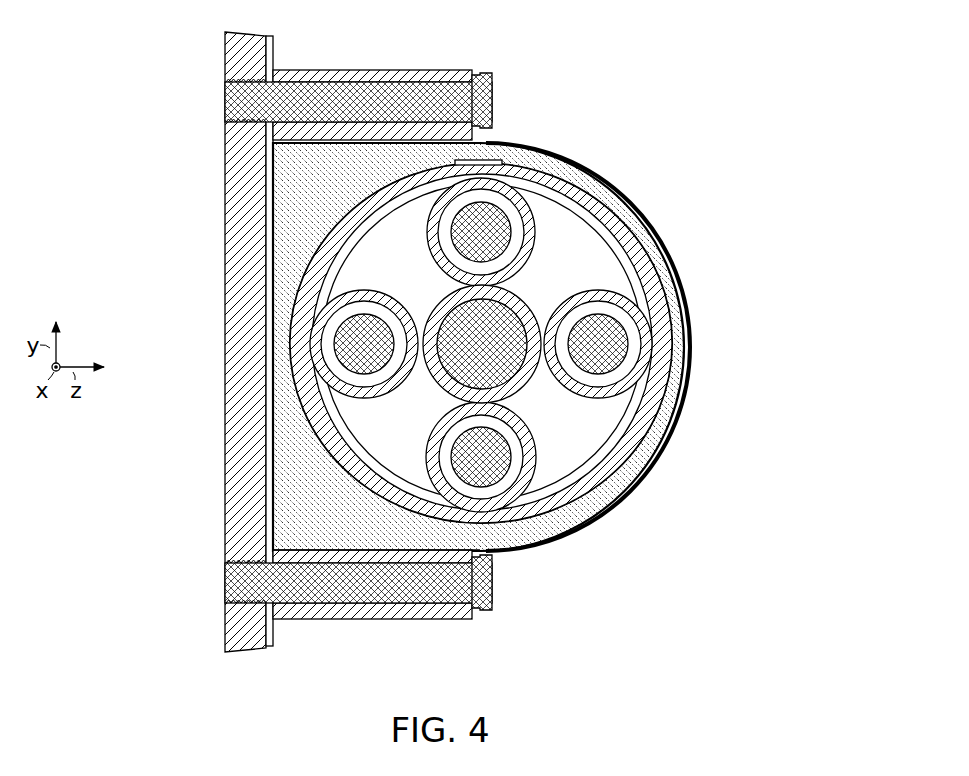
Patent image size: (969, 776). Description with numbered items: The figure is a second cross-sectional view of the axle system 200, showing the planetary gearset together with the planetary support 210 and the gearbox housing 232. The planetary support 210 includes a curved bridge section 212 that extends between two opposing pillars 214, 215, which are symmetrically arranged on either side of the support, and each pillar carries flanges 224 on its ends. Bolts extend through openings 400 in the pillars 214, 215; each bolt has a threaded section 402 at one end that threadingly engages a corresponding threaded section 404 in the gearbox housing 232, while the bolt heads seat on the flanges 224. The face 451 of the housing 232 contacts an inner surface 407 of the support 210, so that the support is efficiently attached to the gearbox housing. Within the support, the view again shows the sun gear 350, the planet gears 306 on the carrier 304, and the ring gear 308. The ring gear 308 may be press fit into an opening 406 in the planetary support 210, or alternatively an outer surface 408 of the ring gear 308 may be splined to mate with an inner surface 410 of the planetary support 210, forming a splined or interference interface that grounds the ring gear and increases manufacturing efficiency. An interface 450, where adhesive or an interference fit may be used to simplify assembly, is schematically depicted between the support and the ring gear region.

The axle system 200 is at (800, 148).
The planetary support 210 is at (638, 172).
The bridge section 212 is at (682, 337).
The pillar 214 is at (385, 63).
The pillar 215 is at (368, 630).
The flange 224 is at (478, 551).
The gearbox housing 232 is at (208, 269).
The carrier 304 is at (465, 247).
The planet gear 306 is at (430, 238).
The ring gear 308 is at (585, 204).
The sun gear 350 is at (525, 299).
The opening 400 is at (456, 80).
The threaded section 402 is at (245, 78).
The threaded section 404 is at (258, 84).
The opening 406 is at (662, 417).
The inner surface 407 is at (272, 553).
The outer surface 408 is at (668, 368).
The inner surface 410 is at (648, 425).
The interface 450 is at (482, 162).
The face 451 is at (274, 640).